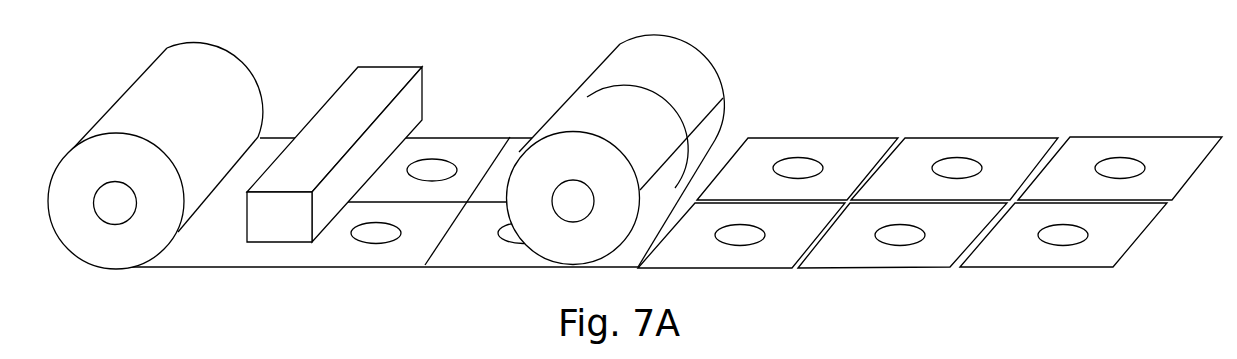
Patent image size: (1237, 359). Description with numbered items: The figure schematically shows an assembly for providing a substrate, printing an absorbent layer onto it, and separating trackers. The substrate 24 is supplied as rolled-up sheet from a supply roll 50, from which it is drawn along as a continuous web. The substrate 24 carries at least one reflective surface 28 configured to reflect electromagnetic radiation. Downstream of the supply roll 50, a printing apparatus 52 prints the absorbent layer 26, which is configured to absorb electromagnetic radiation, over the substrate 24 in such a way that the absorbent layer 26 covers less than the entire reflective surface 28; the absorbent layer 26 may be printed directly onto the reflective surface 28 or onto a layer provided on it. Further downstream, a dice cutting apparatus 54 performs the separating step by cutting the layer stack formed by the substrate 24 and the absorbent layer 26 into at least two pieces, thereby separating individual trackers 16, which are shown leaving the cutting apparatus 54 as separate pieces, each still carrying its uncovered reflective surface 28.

The tracker 16 is at (767, 268).
The substrate 24 is at (227, 233).
The absorbent layer 26 is at (1002, 150).
The reflective surface 28 is at (960, 165).
The supply roll 50 is at (72, 167).
The printing apparatus 52 is at (298, 220).
The dice cutting apparatus 54 is at (570, 240).